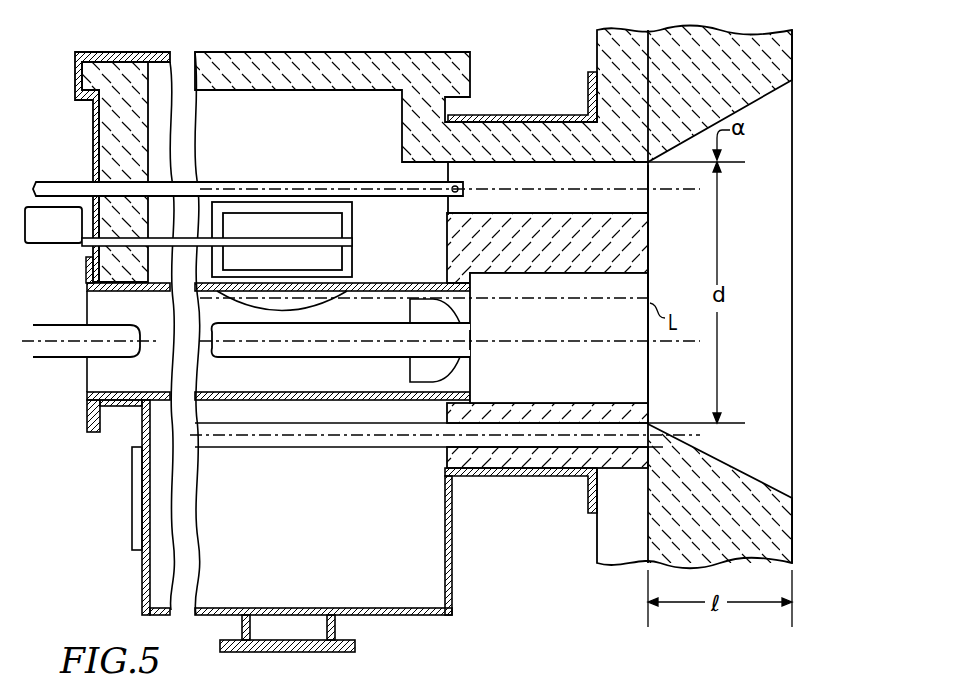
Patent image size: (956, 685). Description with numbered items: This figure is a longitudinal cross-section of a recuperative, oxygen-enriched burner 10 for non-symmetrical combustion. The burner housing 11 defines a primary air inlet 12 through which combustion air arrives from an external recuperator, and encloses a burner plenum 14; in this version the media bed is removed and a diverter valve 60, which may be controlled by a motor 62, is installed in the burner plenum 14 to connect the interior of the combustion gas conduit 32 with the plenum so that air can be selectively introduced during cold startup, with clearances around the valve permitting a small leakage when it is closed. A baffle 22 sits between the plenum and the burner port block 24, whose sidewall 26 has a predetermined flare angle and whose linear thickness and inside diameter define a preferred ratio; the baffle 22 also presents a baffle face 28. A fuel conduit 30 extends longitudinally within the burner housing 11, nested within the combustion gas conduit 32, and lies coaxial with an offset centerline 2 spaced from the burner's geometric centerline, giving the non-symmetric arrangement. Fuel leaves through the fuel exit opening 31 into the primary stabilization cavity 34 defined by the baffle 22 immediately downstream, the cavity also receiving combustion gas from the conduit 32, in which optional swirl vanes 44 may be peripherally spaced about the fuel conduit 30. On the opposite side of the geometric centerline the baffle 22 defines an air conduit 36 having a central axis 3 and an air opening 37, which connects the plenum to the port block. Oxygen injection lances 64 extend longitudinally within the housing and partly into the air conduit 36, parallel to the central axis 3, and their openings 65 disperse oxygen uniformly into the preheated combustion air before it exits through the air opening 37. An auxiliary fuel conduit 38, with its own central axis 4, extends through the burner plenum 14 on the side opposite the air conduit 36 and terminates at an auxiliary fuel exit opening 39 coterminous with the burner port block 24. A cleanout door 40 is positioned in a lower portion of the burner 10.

The burner 10 is at (59, 86).
The burner housing 11 is at (495, 116).
The primary air inlet 12 is at (252, 616).
The burner plenum 14 is at (392, 607).
The baffle 22 is at (598, 35).
The burner port block 24 is at (792, 56).
The sidewall 26 is at (757, 108).
The baffle face 28 is at (652, 297).
The fuel conduit 30 is at (318, 357).
The fuel exit opening 31 is at (482, 351).
The combustion gas conduit 32 is at (86, 266).
The primary stabilization cavity 34 is at (593, 382).
The air conduit 36 is at (465, 204).
The air opening 37 is at (688, 283).
The auxiliary fuel conduit 38 is at (520, 447).
The auxiliary fuel exit opening 39 is at (673, 414).
The cleanout door 40 is at (132, 497).
The swirl vanes 44 is at (410, 307).
The diverter valve 60 is at (352, 216).
The motor 62 is at (52, 246).
The oxygen injection lances 64 is at (282, 183).
The openings 65 is at (460, 188).
The offset centerline 2 is at (655, 340).
The central axis 3 is at (664, 189).
The central axis 4 is at (700, 456).